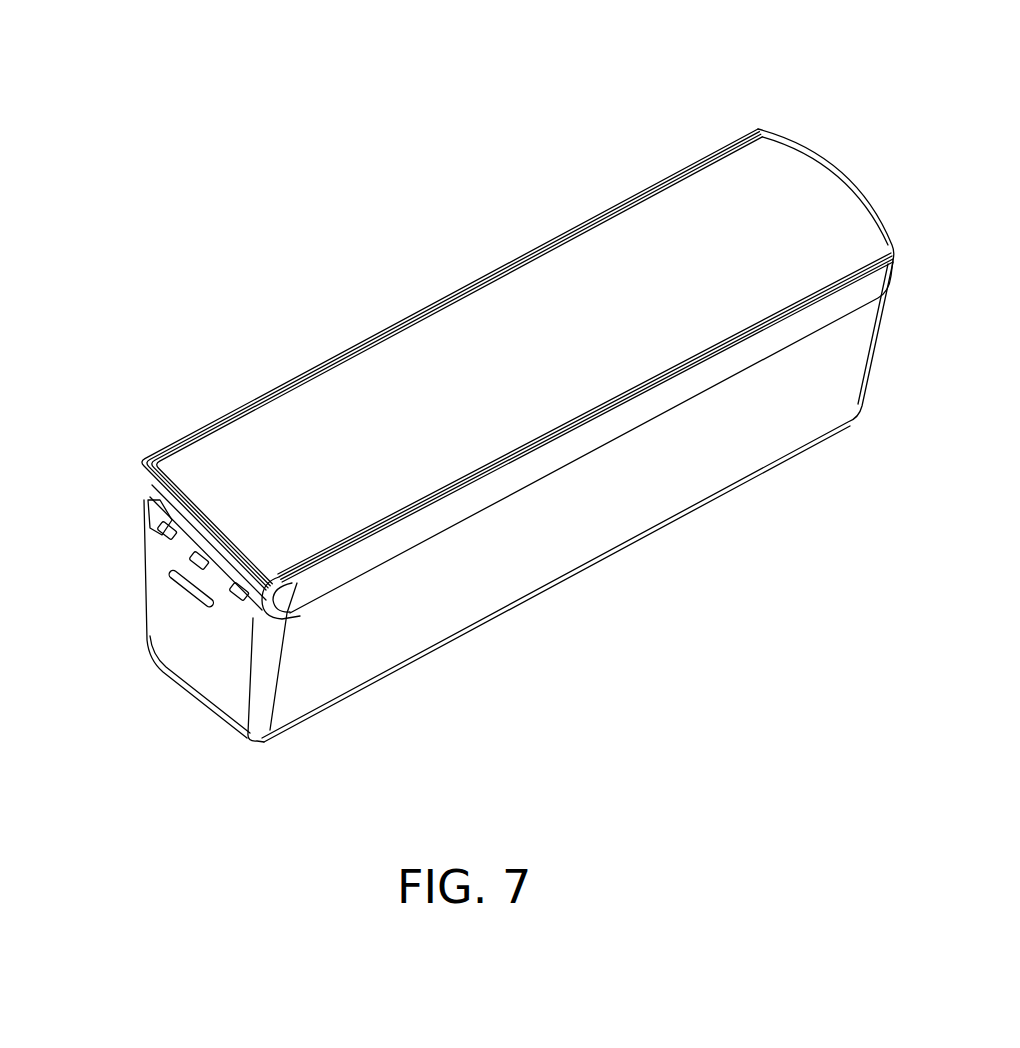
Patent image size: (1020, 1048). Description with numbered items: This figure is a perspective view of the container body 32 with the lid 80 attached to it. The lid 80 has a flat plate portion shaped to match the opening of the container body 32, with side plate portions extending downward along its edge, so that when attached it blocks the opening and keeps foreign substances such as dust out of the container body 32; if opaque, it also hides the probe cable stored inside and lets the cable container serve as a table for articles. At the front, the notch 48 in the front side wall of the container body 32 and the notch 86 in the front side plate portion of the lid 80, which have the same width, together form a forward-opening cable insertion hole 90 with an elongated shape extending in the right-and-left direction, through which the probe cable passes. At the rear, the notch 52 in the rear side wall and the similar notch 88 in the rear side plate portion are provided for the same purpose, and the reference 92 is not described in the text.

The container body 32 is at (678, 462).
The lid 80 is at (536, 318).
The hinge assembly 92 is at (844, 138).
The notch 52 is at (841, 160).
The notch 88 is at (878, 188).
The cable insertion hole 90 is at (154, 609).
The notch 48 is at (178, 544).
The notch 86 is at (191, 589).